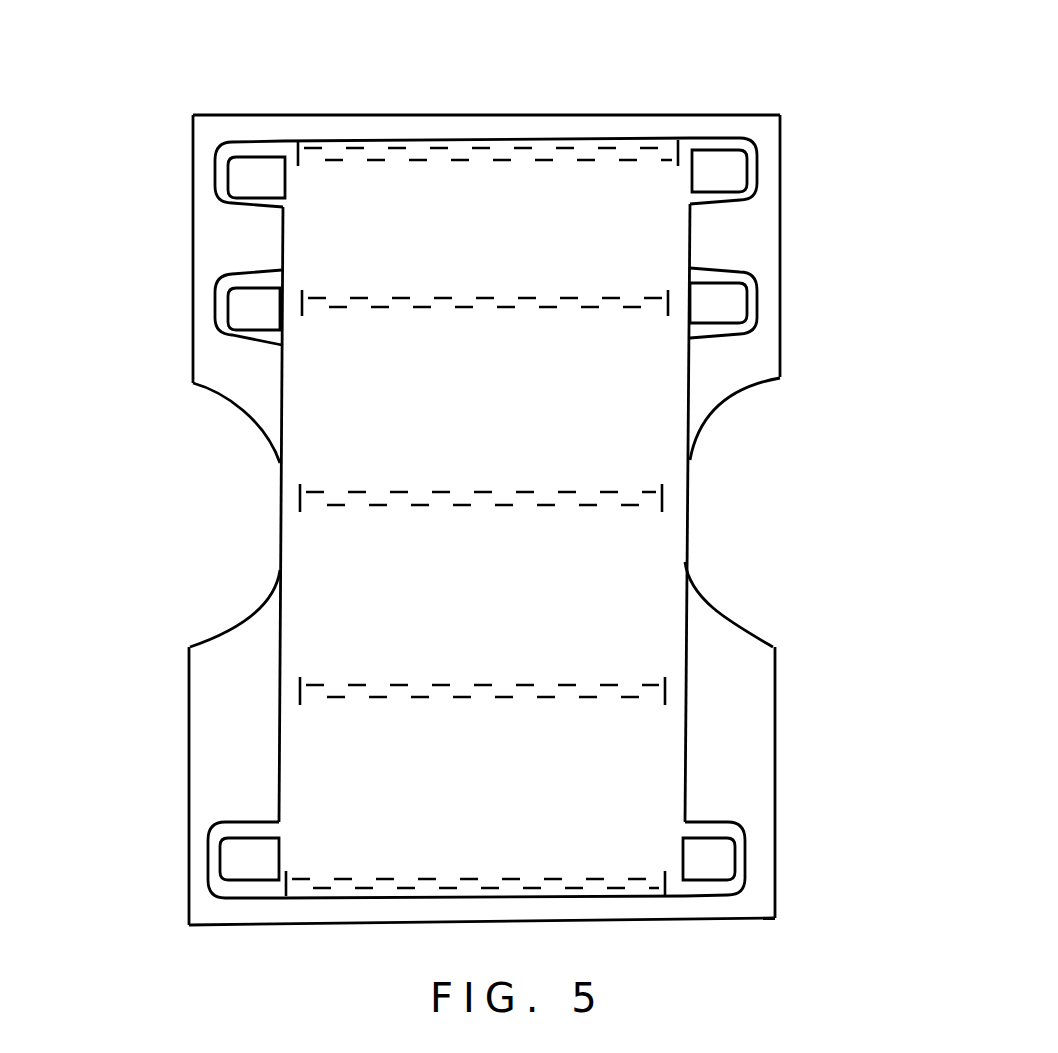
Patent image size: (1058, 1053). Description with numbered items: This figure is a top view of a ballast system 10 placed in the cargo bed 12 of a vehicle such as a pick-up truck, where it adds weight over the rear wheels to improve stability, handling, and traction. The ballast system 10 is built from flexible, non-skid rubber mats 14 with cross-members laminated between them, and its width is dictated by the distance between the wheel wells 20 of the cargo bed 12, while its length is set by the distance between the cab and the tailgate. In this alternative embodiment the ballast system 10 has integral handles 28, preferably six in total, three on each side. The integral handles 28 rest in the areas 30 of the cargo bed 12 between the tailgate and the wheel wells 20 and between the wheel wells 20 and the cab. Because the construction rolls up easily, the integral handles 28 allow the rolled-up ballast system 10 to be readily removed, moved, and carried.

The ballast system 10 is at (650, 88).
The cargo bed 12 is at (752, 360).
The mats 14 is at (643, 657).
The wheel wells 20 is at (748, 485).
The integral handles 28 is at (752, 152).
The areas 30 is at (753, 227).